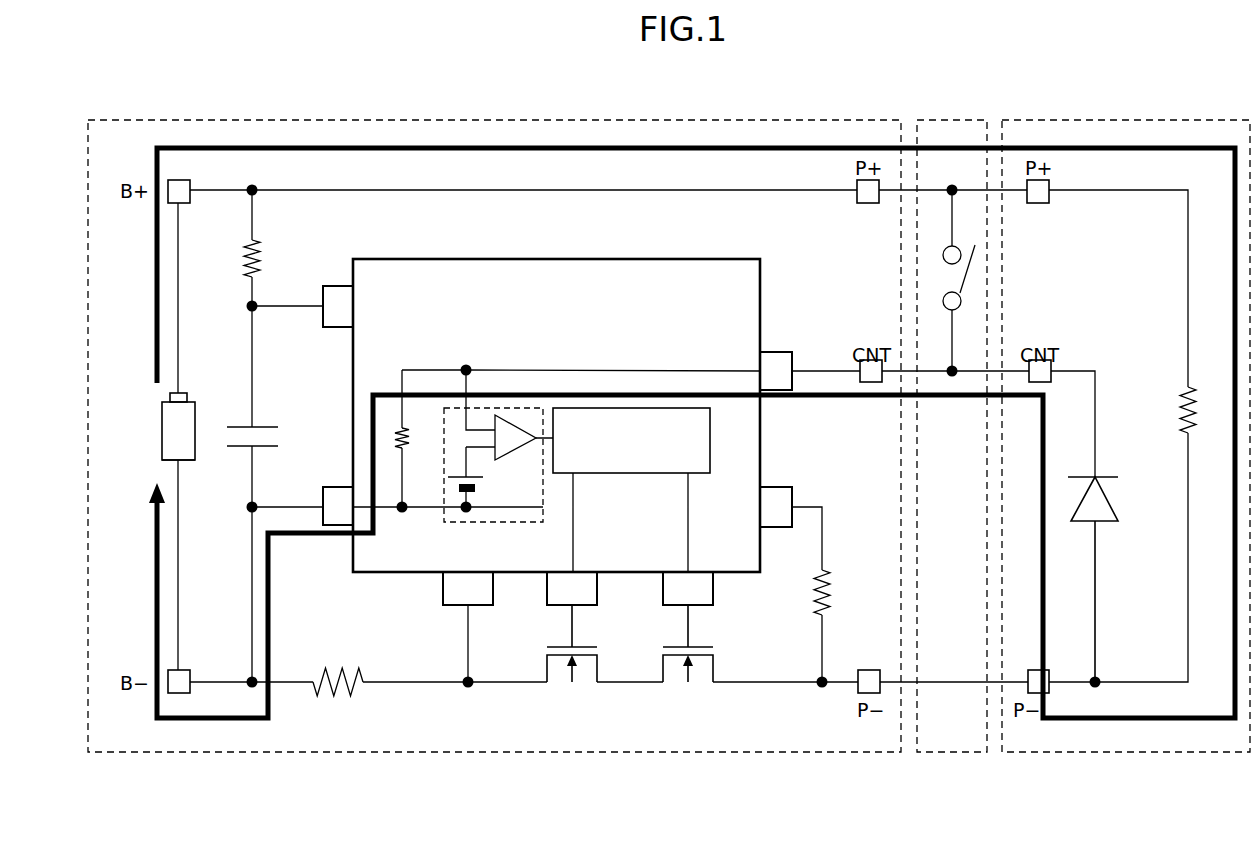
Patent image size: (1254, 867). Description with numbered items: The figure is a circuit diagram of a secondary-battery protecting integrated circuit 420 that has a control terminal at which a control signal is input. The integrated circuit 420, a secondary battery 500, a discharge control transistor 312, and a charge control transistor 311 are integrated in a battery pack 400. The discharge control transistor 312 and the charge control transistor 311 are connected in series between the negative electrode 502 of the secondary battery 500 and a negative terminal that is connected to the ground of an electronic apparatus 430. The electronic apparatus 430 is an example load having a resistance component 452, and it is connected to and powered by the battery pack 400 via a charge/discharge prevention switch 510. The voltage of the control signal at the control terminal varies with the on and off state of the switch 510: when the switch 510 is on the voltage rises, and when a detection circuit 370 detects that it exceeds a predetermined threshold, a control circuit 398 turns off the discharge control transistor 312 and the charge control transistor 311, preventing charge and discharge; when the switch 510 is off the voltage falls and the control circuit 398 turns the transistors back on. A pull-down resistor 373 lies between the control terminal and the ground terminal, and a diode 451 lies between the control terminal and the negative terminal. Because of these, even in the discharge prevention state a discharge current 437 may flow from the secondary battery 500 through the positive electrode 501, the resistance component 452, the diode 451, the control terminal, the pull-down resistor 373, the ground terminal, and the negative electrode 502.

The battery pack 400 is at (583, 120).
The charge/discharge prevention switch 510 is at (947, 120).
The electronic apparatus 430 is at (1187, 120).
The discharge current 437 is at (452, 148).
The secondary-battery protecting integrated circuit 420 is at (635, 259).
The pull-down resistor 373 is at (408, 438).
The detection circuit 370 is at (510, 522).
The control circuit 398 is at (617, 473).
The discharge control transistor 312 is at (580, 645).
The charge control transistor 311 is at (696, 645).
The secondary battery 500 is at (162, 433).
The positive electrode 501 is at (170, 395).
The negative electrode 502 is at (178, 462).
The diode 451 is at (1110, 522).
The resistance component 452 is at (1183, 432).